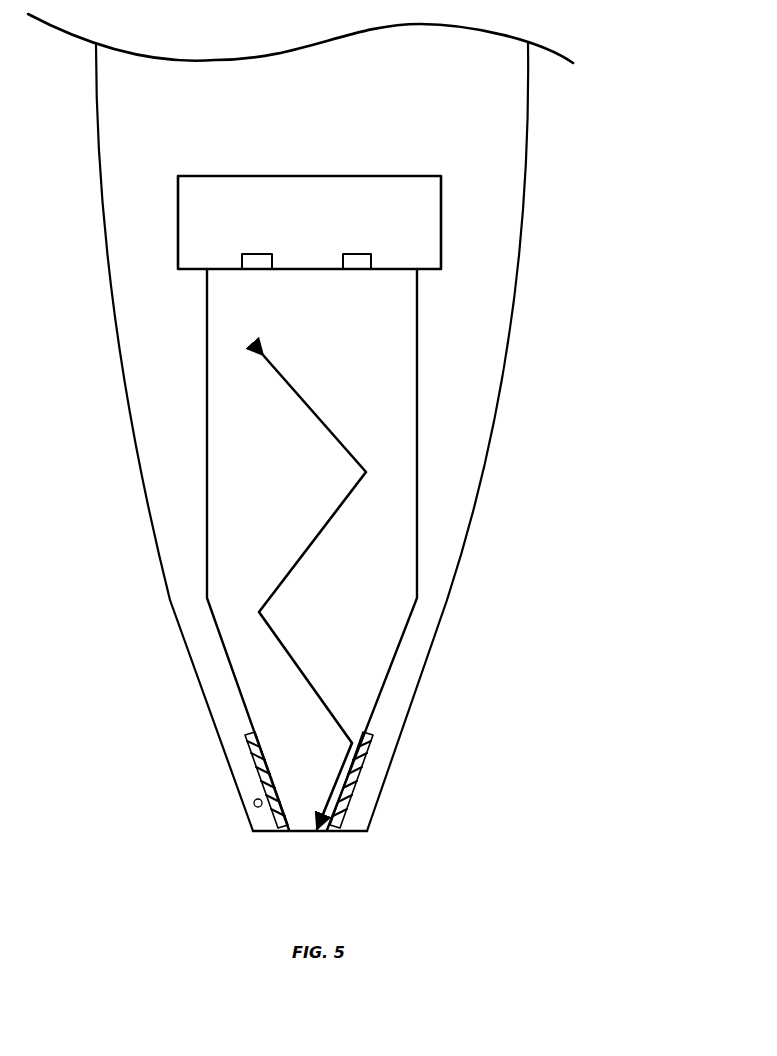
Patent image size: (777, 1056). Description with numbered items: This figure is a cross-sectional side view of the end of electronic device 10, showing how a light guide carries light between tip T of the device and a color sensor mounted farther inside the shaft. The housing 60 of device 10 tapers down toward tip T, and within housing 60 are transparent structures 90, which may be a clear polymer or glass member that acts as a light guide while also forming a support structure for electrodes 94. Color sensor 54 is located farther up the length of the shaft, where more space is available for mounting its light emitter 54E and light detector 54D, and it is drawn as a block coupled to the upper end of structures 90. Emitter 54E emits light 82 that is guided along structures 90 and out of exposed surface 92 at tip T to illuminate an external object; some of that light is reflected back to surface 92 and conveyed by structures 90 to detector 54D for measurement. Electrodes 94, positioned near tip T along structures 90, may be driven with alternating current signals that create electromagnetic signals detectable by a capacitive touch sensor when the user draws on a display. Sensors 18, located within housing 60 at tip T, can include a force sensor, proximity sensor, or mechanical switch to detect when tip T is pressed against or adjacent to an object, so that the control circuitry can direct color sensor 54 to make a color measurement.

The electronic device 10 is at (645, 92).
The housing 60 is at (529, 108).
The color sensor 54 is at (442, 190).
The light detector 54D is at (256, 253).
The light emitter 54E is at (352, 253).
The transparent structures 90 is at (418, 352).
The light 82 is at (363, 480).
The electrodes 94 is at (247, 752).
The exposed surface 92 is at (322, 833).
The sensors 18 is at (254, 806).
The tip T is at (158, 723).